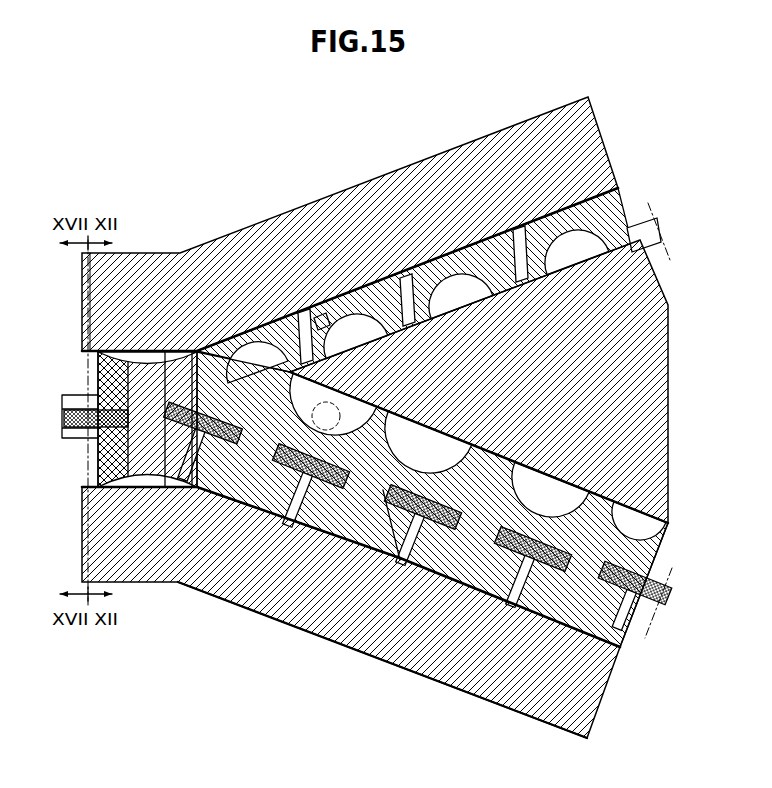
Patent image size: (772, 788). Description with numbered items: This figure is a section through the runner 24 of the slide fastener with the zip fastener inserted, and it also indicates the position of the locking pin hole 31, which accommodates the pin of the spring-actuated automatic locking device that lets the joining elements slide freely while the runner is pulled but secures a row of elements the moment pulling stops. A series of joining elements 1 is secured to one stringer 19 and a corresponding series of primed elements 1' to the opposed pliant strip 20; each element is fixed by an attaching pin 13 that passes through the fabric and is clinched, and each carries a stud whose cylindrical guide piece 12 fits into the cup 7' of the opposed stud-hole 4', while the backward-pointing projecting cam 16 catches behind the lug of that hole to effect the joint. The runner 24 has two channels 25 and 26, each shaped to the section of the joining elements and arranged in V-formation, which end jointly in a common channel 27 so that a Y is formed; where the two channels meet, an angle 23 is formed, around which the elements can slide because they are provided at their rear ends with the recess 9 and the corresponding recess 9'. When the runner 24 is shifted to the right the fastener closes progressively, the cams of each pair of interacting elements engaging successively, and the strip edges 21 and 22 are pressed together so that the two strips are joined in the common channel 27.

The joining element 1 is at (351, 612).
The recess 9 is at (176, 514).
The guide piece 12 is at (326, 416).
The attaching pin 13 is at (218, 460).
The projecting cam 16 is at (362, 490).
The stringer 19 is at (388, 500).
The pliant strip 20 is at (652, 252).
The strip edge 21 is at (415, 540).
The strip edge 22 is at (417, 320).
The angle 23 is at (195, 352).
The runner 24 is at (468, 650).
The channel 25 is at (507, 233).
The channel 26 is at (512, 590).
The common channel 27 is at (90, 373).
The locking pin hole 31 is at (290, 500).
The joining element 1' is at (288, 243).
The stud-hole 4' is at (262, 266).
The cup 7' is at (334, 250).
The recess 9' is at (232, 283).